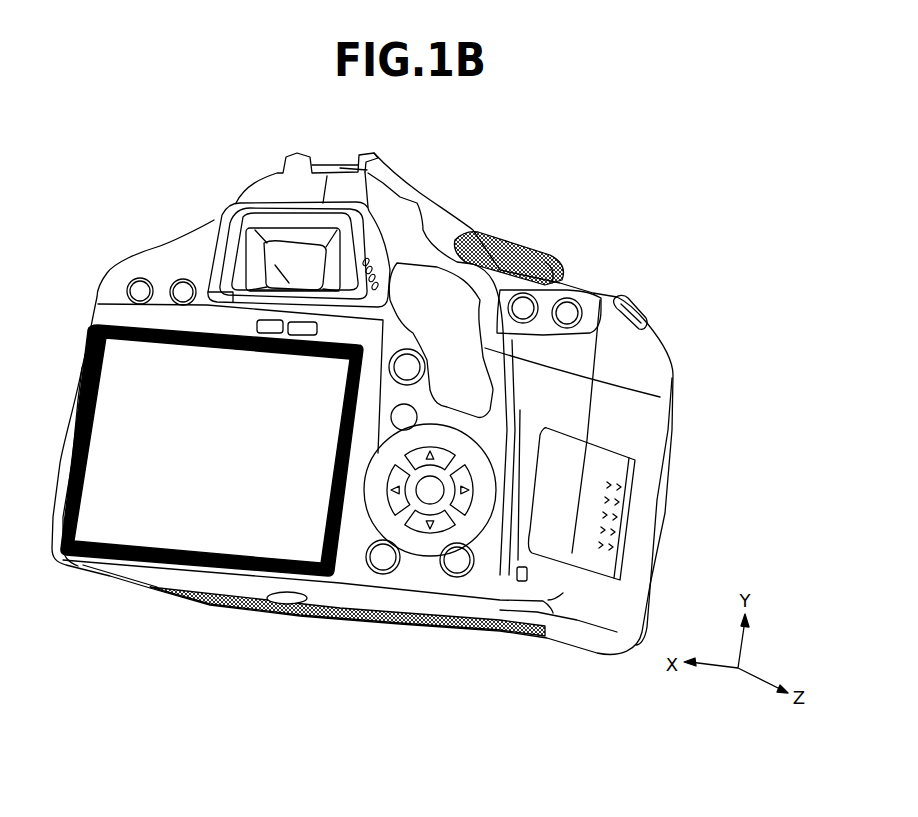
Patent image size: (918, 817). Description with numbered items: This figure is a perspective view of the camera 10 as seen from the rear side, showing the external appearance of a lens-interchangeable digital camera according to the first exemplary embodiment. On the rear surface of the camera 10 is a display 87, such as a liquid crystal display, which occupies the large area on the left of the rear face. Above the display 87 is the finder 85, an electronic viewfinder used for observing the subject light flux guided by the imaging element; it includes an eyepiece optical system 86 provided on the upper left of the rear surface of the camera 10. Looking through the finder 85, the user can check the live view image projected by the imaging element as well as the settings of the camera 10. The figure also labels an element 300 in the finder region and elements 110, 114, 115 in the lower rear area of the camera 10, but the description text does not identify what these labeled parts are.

The camera 10 is at (606, 162).
The finder 85 is at (305, 247).
The eyepiece optical system 86 is at (267, 250).
The eyepiece housing 300 is at (328, 195).
The display 87 is at (153, 522).
The operation unit 110 is at (406, 606).
The operation button 114 is at (464, 609).
The operation button 115 is at (427, 490).